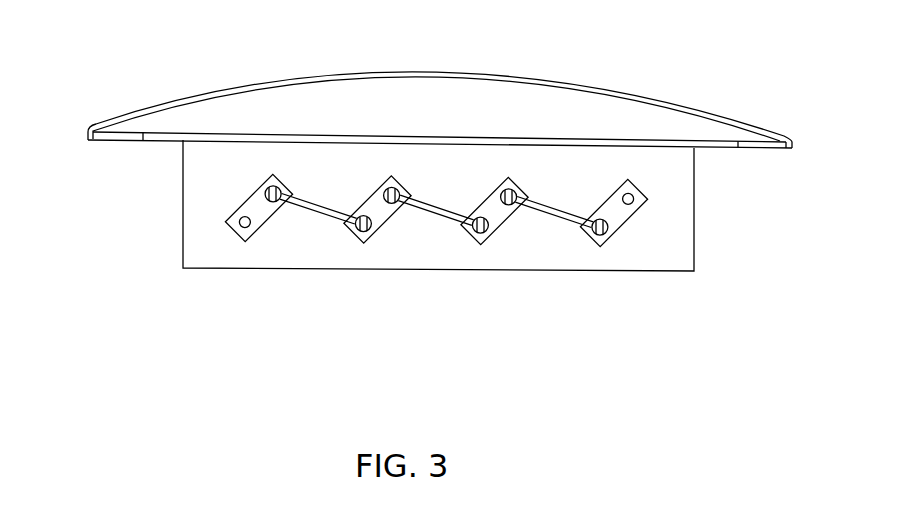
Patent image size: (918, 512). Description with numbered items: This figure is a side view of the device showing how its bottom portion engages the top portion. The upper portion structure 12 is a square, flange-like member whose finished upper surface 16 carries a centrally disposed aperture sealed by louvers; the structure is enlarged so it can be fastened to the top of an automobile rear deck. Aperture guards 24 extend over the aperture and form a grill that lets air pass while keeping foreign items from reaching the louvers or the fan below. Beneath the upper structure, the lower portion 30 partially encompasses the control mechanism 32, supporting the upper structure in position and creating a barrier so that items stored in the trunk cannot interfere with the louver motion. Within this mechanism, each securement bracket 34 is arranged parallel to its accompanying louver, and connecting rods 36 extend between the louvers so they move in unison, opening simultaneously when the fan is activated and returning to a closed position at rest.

The upper portion structure 12 is at (780, 152).
The finished upper surface 16 is at (663, 137).
The aperture guards 24 is at (750, 120).
The enclosure box 30 is at (695, 240).
The control mechanism 32 is at (272, 227).
The securement bracket 34 is at (227, 195).
The connecting rods 36 is at (317, 217).